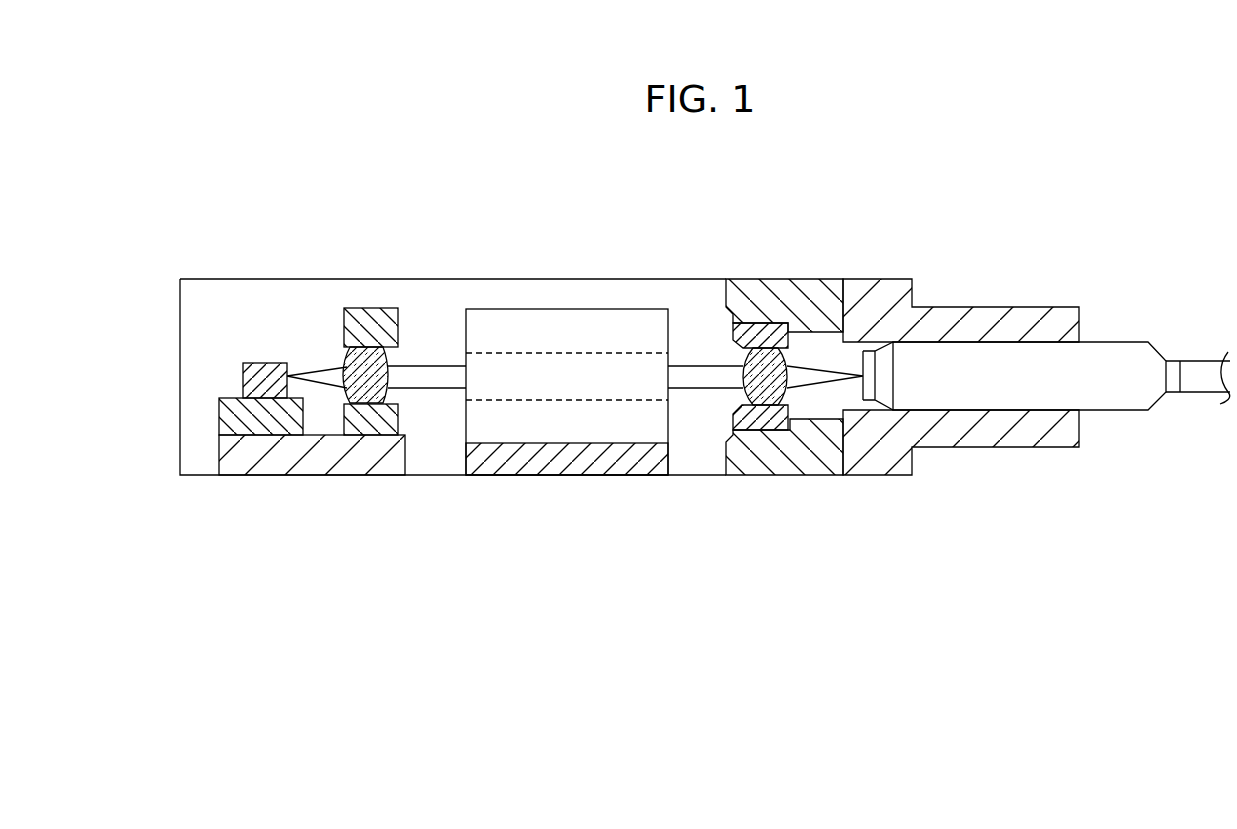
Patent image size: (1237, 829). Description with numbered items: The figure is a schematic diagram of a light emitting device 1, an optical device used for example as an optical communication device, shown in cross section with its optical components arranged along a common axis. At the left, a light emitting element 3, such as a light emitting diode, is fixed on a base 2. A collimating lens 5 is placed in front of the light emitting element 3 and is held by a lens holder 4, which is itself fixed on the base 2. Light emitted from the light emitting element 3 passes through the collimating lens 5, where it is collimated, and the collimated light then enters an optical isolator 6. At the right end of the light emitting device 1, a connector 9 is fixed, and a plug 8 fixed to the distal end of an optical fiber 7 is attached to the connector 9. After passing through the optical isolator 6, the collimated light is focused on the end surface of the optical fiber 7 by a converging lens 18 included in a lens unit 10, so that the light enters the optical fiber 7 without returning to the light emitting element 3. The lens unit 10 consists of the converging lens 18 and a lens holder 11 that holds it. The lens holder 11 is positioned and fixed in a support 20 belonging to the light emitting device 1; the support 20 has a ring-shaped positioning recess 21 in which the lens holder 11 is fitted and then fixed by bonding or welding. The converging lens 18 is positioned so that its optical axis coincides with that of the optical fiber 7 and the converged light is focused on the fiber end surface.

The light emitting device 1 is at (912, 244).
The base 2 is at (303, 463).
The light emitting element 3 is at (267, 363).
The lens holder 4 is at (373, 326).
The collimating lens 5 is at (385, 391).
The optical isolator 6 is at (507, 365).
The optical fiber 7 is at (1200, 378).
The plug 8 is at (1007, 373).
The connector 9 is at (965, 431).
The lens unit 10 is at (722, 429).
The lens holder 11 is at (760, 331).
The converging lens 18 is at (743, 377).
The support 20 is at (790, 467).
The positioning recess 21 is at (787, 327).